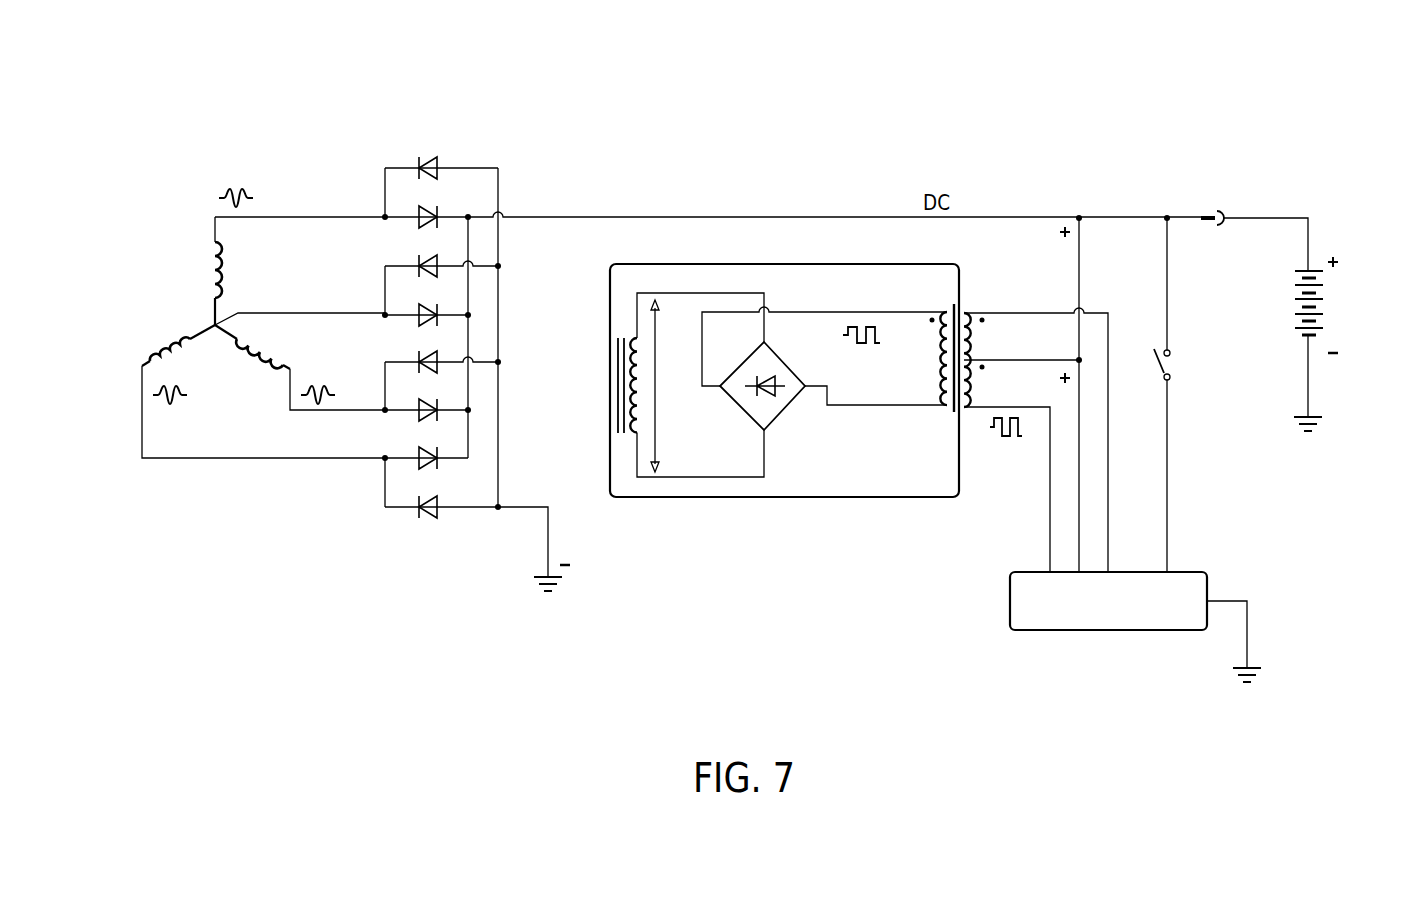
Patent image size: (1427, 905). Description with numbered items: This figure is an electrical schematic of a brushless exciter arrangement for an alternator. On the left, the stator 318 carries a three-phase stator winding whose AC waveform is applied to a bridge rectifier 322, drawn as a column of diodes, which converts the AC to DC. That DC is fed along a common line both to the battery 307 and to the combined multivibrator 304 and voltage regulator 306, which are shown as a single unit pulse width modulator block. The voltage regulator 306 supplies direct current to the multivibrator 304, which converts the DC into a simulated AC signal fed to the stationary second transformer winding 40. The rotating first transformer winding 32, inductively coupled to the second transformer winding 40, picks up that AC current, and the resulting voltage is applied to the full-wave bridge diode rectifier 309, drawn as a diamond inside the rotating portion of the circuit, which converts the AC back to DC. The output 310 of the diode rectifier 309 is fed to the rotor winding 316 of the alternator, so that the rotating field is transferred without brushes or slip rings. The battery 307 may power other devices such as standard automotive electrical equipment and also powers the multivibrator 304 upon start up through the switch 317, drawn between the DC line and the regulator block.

The stator 318 is at (176, 282).
The bridge rectifier 322 is at (419, 128).
The rotor winding 316 is at (627, 306).
The output 310 is at (770, 330).
The full-wave bridge diode rectifier 309 is at (800, 428).
The first transformer winding 32 is at (945, 420).
The second transformer winding 40 is at (973, 300).
The switch 317 is at (1187, 370).
The battery 307 is at (1338, 228).
The multivibrator 304 is at (1135, 627).
The voltage regulator 306 is at (1147, 616).